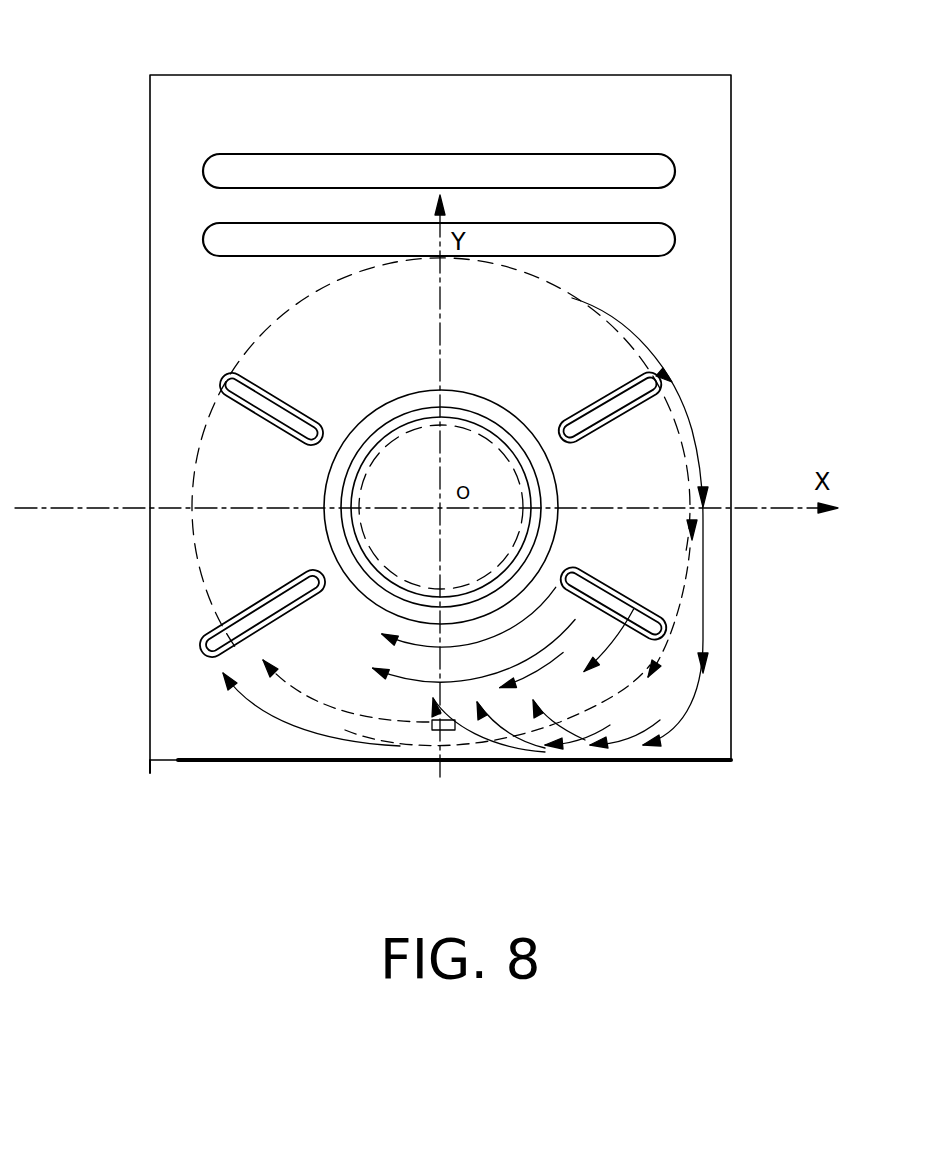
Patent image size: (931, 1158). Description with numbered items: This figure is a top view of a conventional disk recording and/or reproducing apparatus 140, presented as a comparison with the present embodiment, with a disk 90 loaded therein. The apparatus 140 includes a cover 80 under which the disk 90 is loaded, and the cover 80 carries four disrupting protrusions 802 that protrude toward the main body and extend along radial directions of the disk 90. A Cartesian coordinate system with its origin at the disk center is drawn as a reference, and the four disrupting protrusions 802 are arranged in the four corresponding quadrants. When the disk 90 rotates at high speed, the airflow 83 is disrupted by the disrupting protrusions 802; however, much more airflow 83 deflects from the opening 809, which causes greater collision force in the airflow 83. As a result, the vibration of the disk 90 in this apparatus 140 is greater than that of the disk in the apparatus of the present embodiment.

The disk recording and/or reproducing apparatus 140 is at (448, 31).
The cover 80 is at (692, 282).
The airflow 83 is at (705, 607).
The disk 90 is at (200, 553).
The disrupting protrusions 802 is at (203, 641).
The opening 809 is at (198, 763).